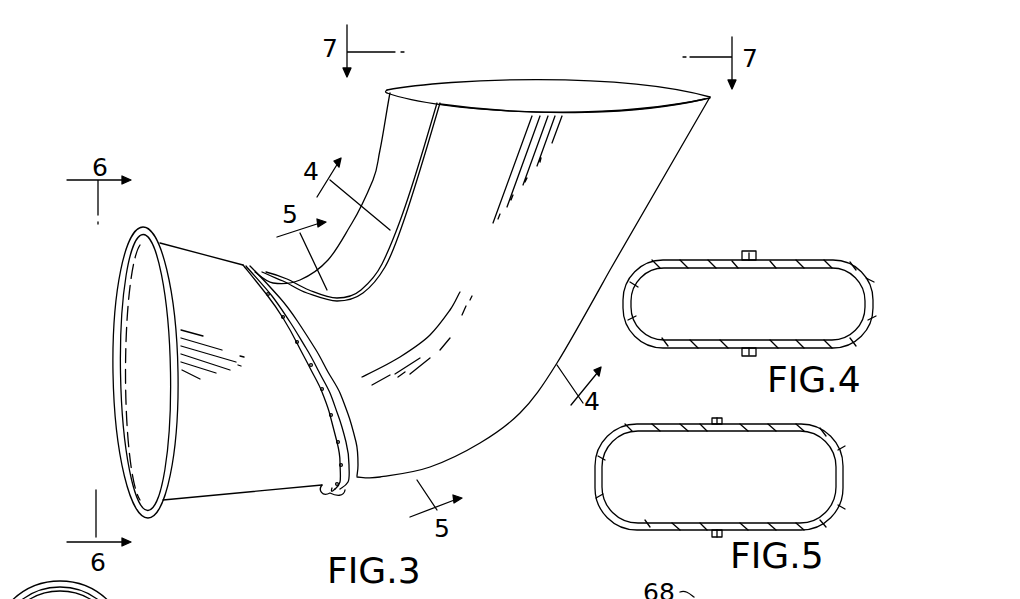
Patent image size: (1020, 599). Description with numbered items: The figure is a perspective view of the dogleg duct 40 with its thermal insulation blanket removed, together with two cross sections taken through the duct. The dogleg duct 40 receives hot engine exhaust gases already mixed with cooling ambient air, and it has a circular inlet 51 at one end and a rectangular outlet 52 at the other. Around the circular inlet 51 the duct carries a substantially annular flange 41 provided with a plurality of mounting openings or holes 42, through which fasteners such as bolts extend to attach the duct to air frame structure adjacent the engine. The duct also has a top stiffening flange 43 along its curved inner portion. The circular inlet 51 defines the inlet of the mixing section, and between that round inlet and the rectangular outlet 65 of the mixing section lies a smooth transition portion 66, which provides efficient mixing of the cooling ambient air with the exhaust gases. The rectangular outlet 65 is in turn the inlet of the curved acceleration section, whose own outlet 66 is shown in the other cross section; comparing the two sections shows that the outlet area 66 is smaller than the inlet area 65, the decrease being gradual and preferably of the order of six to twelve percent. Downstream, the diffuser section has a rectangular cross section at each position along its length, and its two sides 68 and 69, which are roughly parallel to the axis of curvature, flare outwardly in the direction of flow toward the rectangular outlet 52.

In FIG. 3, the dogleg duct 40 is at (480, 443).
In FIG. 3, the annular flange 41 is at (345, 490).
In FIG. 3, the mounting openings or holes 42 is at (327, 488).
In FIG. 3, the top stiffening flange 43 is at (423, 135).
In FIG. 3, the circular inlet 51 is at (123, 267).
In FIG. 3, the rectangular outlet 52 is at (523, 78).
In FIG. 5, the rectangular outlet of mixing section 65 is at (607, 513).
In FIG. 3, the smooth transition portion 66 is at (254, 434).
In FIG. 4, the smooth transition portion 66 is at (793, 263).
In FIG. 3, the side of diffuser 68 is at (488, 169).
In FIG. 3, the side of diffuser 69 is at (627, 85).